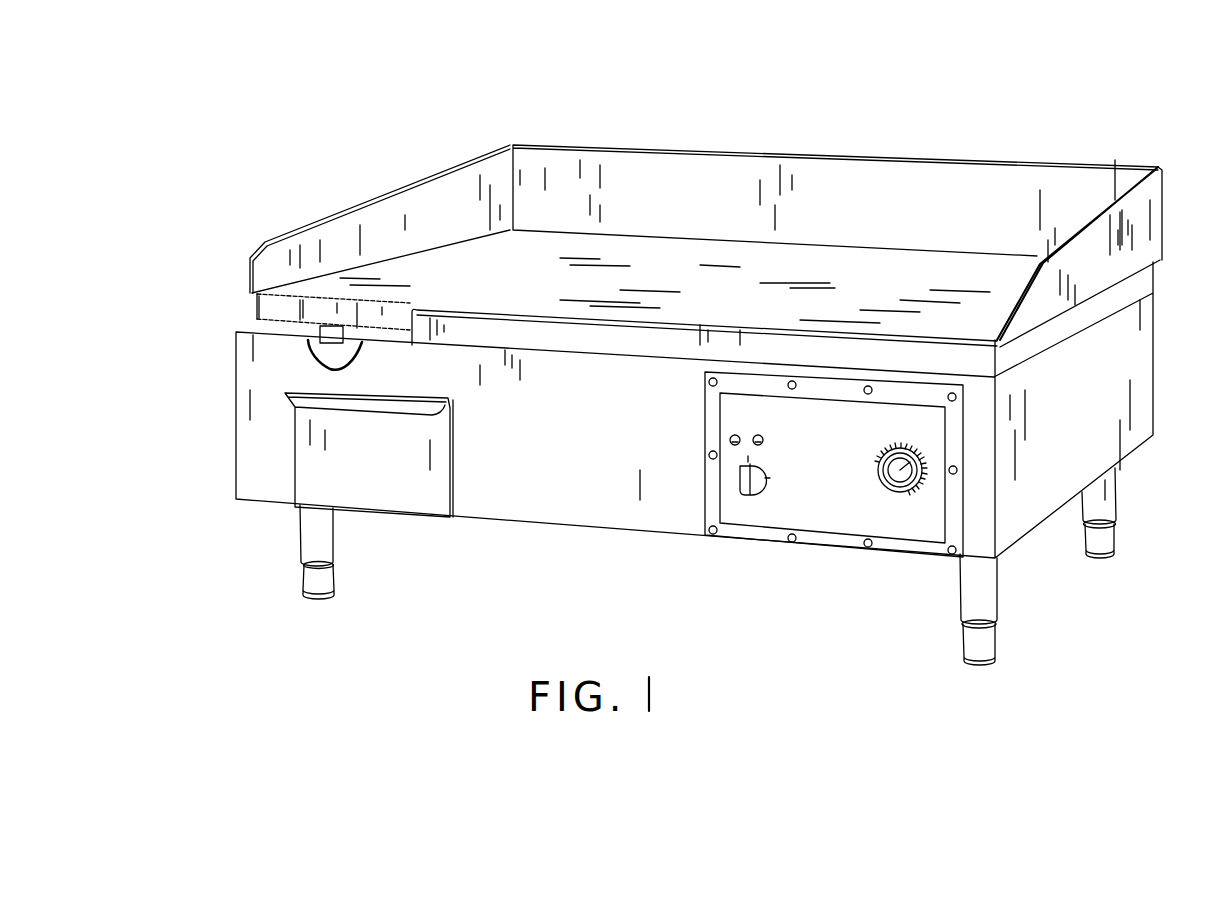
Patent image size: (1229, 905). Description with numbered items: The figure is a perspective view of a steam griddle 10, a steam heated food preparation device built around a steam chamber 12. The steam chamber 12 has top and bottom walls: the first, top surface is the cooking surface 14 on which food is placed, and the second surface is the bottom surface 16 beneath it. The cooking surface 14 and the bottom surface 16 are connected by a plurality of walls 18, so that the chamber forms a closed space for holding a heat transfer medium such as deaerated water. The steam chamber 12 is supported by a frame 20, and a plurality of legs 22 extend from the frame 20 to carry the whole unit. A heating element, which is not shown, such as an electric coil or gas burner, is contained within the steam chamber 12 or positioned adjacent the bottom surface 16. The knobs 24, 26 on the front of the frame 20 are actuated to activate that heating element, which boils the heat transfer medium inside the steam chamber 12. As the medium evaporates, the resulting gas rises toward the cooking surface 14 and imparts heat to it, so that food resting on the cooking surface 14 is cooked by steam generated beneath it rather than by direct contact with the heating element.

The steam griddle 10 is at (257, 96).
The steam chamber 12 is at (230, 316).
The cooking surface 14 is at (516, 275).
The bottom surface 16 is at (307, 337).
The walls 18 is at (687, 347).
The frame 20 is at (603, 558).
The legs 22 is at (313, 533).
The knob 24 is at (758, 497).
The knob 26 is at (893, 483).